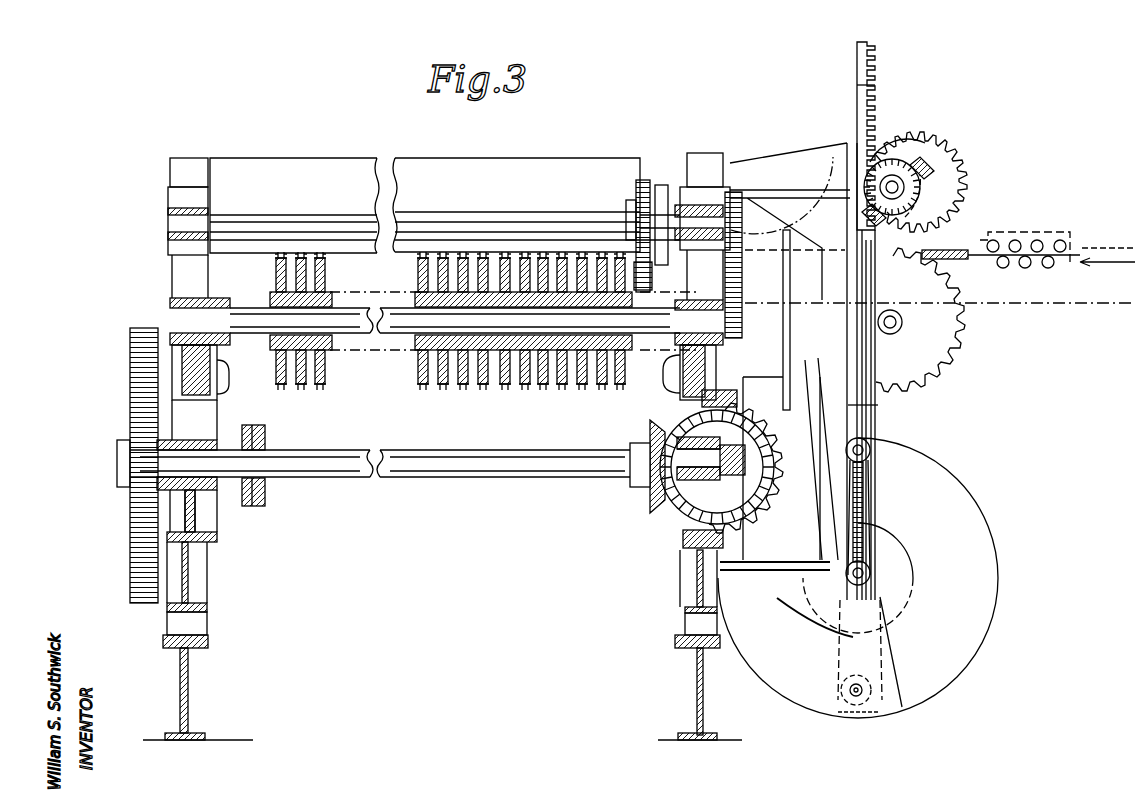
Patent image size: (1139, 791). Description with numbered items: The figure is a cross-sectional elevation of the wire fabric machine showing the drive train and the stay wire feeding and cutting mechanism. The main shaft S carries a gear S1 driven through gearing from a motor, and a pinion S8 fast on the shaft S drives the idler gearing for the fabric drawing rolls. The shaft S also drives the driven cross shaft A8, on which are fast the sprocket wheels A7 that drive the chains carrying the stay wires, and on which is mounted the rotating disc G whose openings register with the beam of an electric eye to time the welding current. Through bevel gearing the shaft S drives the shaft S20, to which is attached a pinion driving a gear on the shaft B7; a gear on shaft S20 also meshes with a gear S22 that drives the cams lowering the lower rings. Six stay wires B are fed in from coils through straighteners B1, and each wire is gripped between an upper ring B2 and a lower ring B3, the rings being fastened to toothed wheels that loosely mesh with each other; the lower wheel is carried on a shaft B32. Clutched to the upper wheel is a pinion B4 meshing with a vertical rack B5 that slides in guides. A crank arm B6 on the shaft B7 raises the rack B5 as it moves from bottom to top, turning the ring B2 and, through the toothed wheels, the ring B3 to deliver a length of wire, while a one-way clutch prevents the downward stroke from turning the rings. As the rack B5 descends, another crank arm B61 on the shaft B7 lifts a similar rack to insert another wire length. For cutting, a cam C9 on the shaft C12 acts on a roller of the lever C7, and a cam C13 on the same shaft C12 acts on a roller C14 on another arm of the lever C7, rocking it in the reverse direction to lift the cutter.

The shaft C12 is at (483, 215).
The cam C13 is at (642, 180).
The cam C9 is at (661, 185).
The lever C7 is at (654, 288).
The driven cross shaft A8 is at (393, 328).
The sprocket wheel A7 is at (464, 387).
The roller C14 is at (656, 355).
The rotating disc G is at (790, 302).
The gear S1 is at (130, 436).
The pinion S8 is at (262, 506).
The main shaft S is at (428, 468).
The shaft S20 is at (650, 505).
The gear S22 is at (862, 418).
The vertical rack B5 is at (876, 108).
The upper ring B2 is at (940, 144).
The pinion B4 is at (934, 200).
The straightener B1 is at (1053, 221).
The stay wire B is at (1078, 250).
The lower ring B3 is at (950, 290).
The shaft B32 is at (902, 330).
The crank arm B6 is at (872, 492).
The shaft B7 is at (996, 548).
The crank arm B61 is at (840, 690).